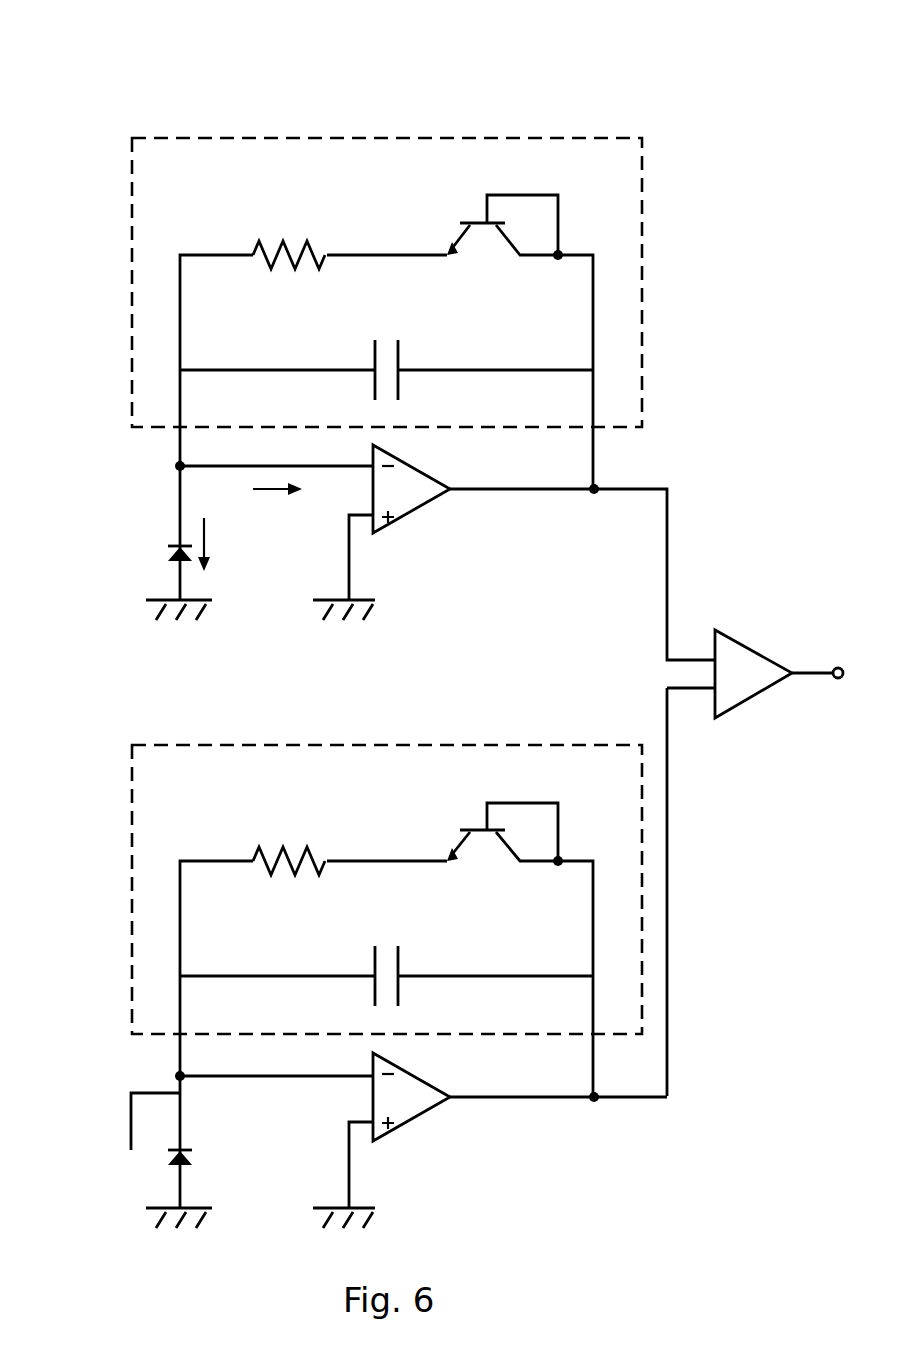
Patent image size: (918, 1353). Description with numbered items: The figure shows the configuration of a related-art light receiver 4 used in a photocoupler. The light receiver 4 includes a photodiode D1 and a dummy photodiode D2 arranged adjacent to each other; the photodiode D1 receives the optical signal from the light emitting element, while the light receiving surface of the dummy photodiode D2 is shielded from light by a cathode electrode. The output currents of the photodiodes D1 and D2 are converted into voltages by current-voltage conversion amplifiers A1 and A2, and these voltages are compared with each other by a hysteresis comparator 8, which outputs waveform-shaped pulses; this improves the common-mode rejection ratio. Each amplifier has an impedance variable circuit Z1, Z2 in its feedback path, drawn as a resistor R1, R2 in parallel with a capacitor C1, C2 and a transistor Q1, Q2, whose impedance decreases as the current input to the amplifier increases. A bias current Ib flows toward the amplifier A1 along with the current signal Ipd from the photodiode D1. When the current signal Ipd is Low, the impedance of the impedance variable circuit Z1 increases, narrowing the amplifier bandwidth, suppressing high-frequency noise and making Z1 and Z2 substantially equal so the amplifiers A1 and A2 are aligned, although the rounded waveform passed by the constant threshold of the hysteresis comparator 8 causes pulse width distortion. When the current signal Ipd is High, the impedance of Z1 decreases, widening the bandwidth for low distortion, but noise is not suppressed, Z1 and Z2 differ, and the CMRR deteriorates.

The light receiver 4 is at (789, 157).
The hysteresis comparator 8 is at (740, 688).
The impedance variable circuit Z1 is at (467, 148).
The impedance variable circuit Z2 is at (468, 769).
The first feedback resistor R1 is at (283, 254).
The second feedback resistor R2 is at (283, 860).
The first feedback capacitor C1 is at (384, 346).
The second feedback capacitor C2 is at (384, 952).
The first transistor Q1 is at (490, 257).
The second transistor Q2 is at (490, 863).
The current-voltage conversion amplifier A1 is at (420, 506).
The current-voltage conversion amplifier A2 is at (420, 1113).
The photodiode D1 is at (166, 549).
The dummy photodiode D2 is at (166, 1156).
The bias current Ib is at (277, 501).
The current signal Ipd is at (222, 551).